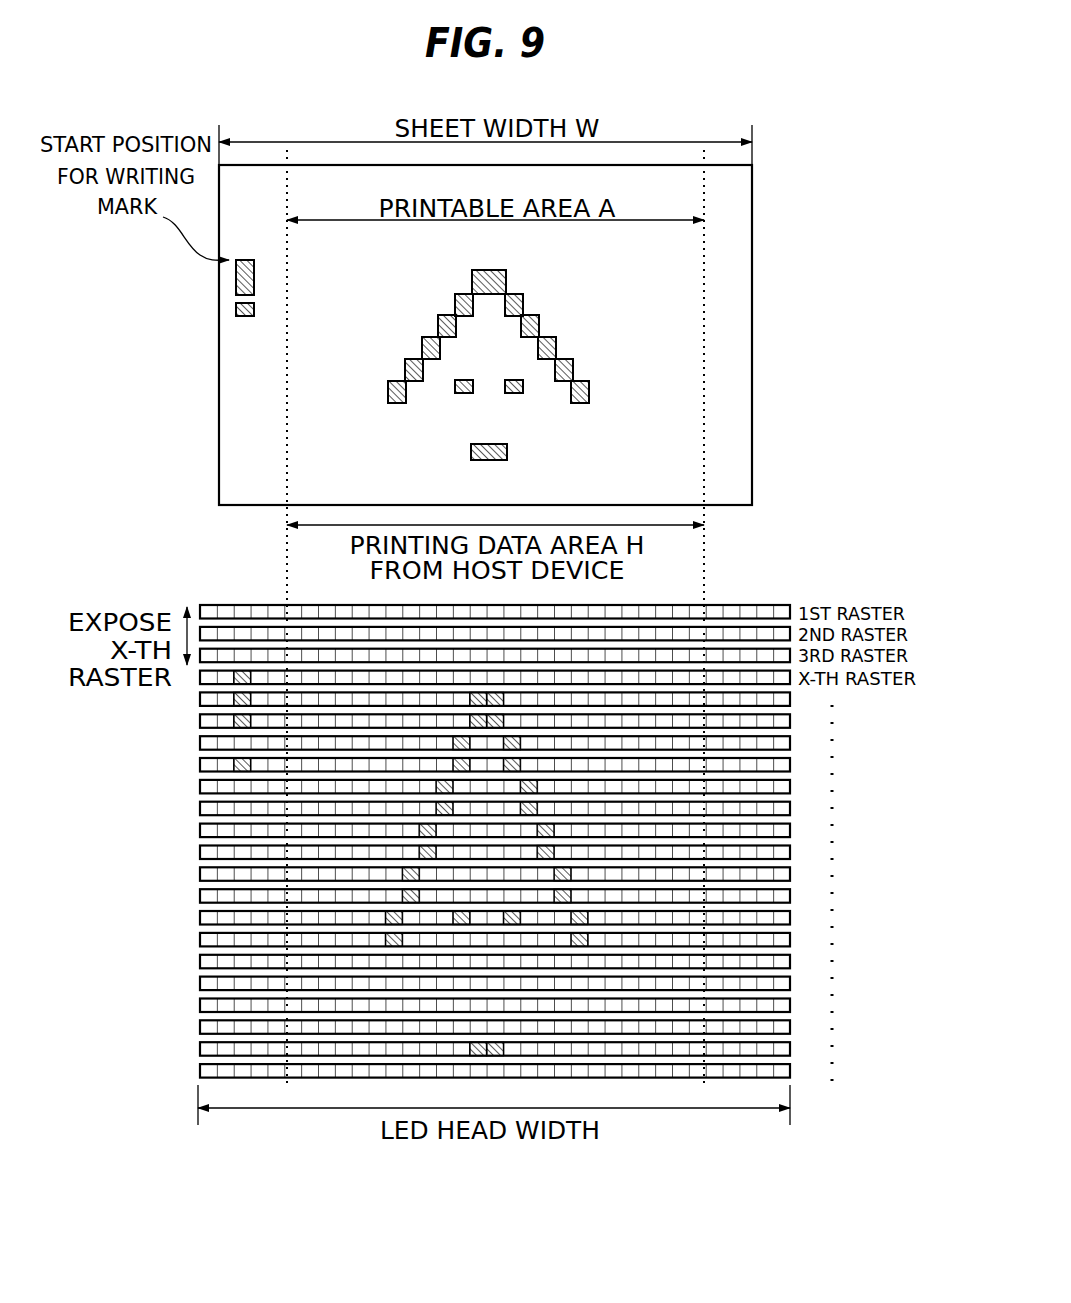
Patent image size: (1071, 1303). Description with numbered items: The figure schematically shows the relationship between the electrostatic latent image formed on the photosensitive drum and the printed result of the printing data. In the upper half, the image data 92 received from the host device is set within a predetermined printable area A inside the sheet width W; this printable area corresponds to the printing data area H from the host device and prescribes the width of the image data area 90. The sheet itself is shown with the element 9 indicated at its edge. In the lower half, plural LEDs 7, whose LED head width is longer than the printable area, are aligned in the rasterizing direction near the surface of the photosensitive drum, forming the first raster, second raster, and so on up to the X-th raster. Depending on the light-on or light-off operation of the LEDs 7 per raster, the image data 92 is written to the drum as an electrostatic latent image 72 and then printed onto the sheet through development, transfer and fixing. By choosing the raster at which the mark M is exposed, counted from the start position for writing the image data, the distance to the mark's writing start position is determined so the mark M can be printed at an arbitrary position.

The recording sheet 9 is at (737, 379).
The image data area 90 is at (708, 198).
The image data 92 is at (384, 392).
The LEDs 7 is at (188, 731).
The electrostatic latent image 72 is at (427, 828).
The mark M is at (229, 298).